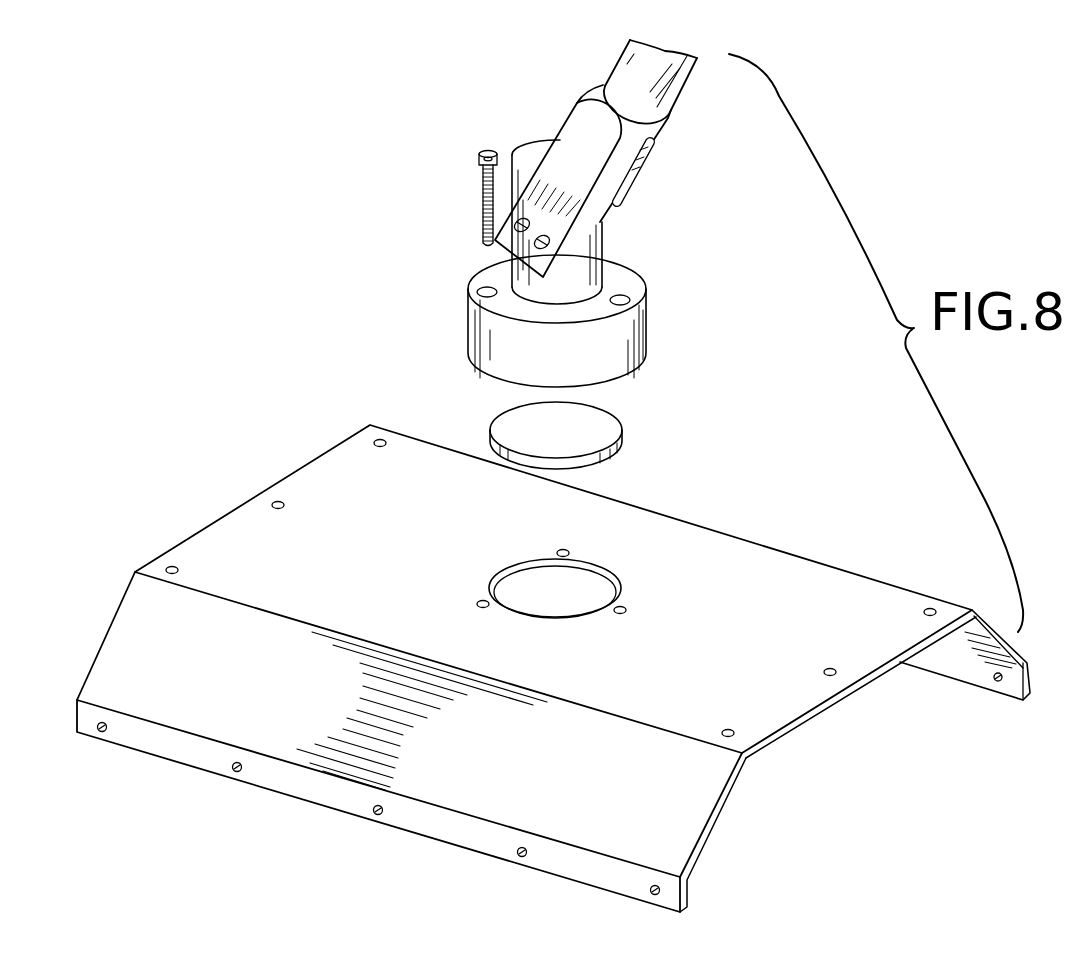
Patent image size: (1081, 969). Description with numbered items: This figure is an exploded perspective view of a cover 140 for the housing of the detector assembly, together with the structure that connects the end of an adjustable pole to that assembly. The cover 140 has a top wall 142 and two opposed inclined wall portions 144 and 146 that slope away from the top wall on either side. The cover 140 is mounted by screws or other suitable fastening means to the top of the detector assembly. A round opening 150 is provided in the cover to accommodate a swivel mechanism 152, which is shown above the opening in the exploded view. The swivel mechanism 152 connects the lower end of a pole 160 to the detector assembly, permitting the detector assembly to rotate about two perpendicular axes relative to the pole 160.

The cover 140 is at (803, 550).
The top wall 142 is at (417, 541).
The inclined wall portion 144 is at (140, 620).
The inclined wall portion 146 is at (990, 617).
The round opening 150 is at (618, 583).
The swivel mechanism 152 is at (645, 229).
The pole 160 is at (683, 78).